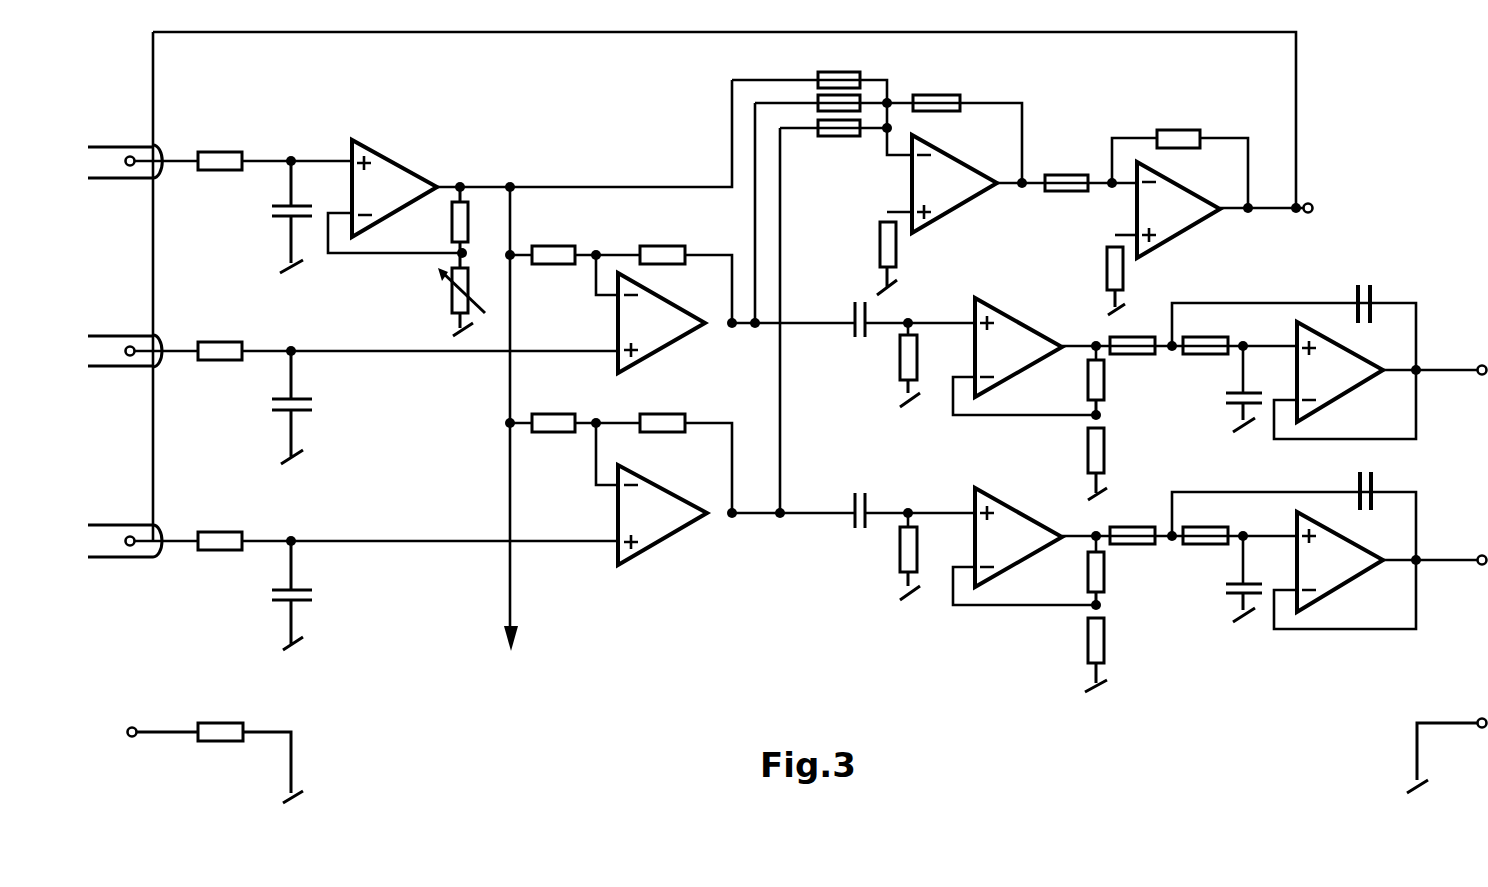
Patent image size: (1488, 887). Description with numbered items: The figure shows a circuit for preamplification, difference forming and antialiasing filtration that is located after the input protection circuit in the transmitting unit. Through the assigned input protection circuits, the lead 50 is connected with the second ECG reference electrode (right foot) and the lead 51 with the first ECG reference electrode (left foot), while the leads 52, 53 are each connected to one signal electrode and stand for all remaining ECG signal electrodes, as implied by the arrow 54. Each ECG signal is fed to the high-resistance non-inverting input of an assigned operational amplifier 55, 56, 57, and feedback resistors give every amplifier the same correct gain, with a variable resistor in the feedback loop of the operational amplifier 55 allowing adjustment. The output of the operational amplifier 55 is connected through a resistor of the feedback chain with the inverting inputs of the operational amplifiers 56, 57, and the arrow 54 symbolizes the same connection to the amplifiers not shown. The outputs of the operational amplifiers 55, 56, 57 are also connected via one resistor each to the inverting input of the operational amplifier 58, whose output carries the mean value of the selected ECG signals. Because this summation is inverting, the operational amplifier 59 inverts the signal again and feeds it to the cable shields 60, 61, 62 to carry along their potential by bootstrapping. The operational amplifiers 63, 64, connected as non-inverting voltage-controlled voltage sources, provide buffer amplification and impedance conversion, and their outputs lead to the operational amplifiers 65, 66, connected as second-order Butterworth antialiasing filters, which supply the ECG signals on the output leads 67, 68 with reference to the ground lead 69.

The lead 50 is at (183, 727).
The lead 51 is at (183, 157).
The lead 52 is at (187, 338).
The lead 53 is at (185, 537).
The arrow 54 is at (520, 640).
The operational amplifier 55 is at (390, 157).
The operational amplifier 56 is at (668, 348).
The operational amplifier 57 is at (668, 542).
The operational amplifier 58 is at (962, 208).
The operational amplifier 59 is at (1187, 233).
The cable shield 60 is at (108, 143).
The cable shield 61 is at (112, 330).
The cable shield 62 is at (113, 523).
The operational amplifier 63 is at (1018, 317).
The operational amplifier 64 is at (1020, 510).
The operational amplifier 65 is at (1363, 388).
The operational amplifier 66 is at (1363, 578).
The output lead 67 is at (1460, 367).
The output lead 68 is at (1458, 557).
The ground lead 69 is at (1462, 720).